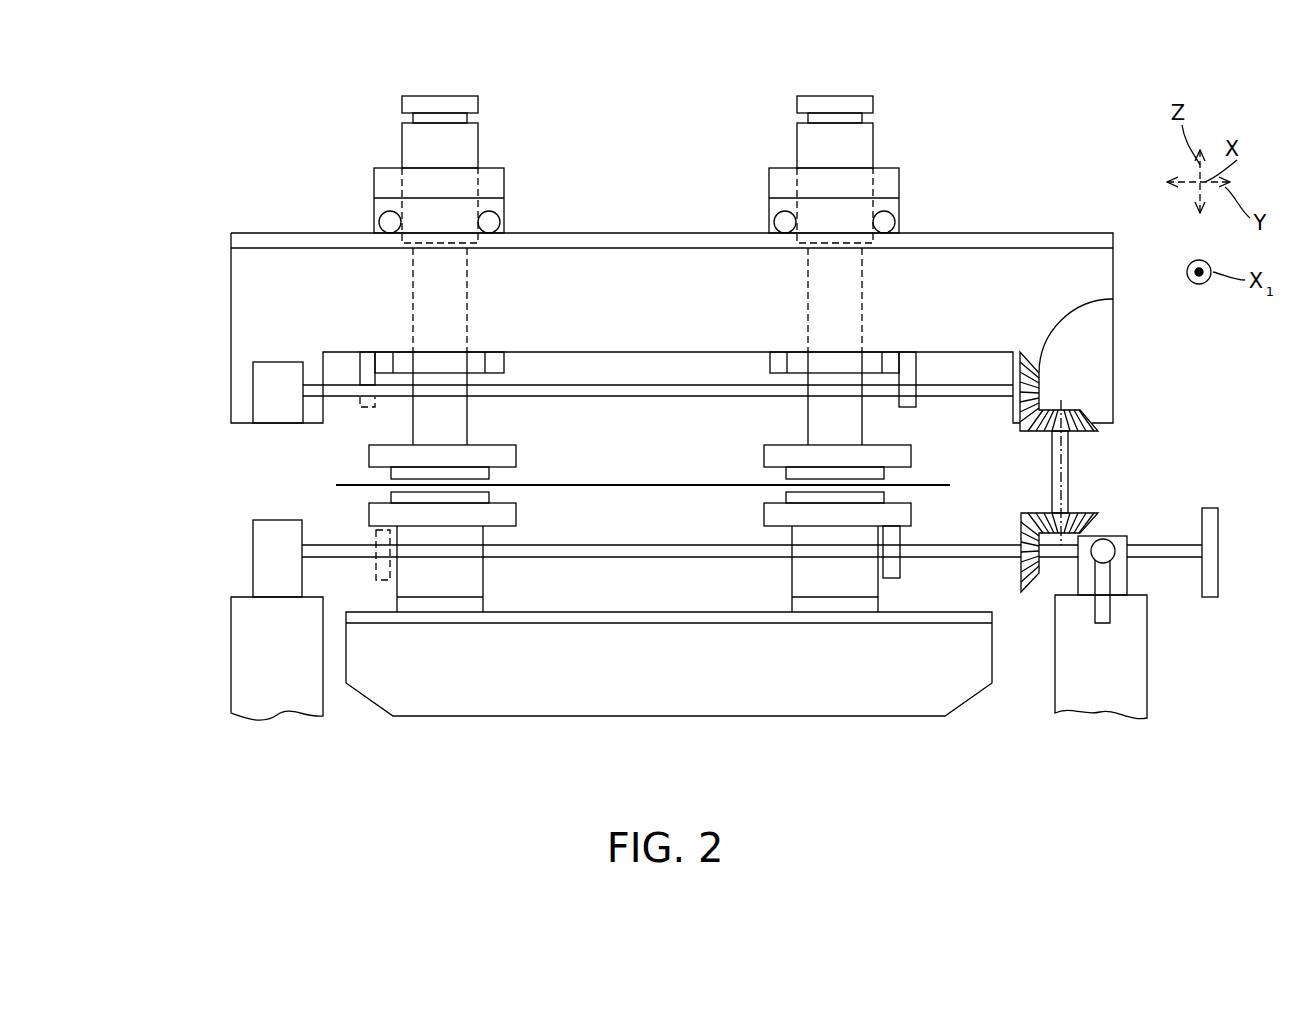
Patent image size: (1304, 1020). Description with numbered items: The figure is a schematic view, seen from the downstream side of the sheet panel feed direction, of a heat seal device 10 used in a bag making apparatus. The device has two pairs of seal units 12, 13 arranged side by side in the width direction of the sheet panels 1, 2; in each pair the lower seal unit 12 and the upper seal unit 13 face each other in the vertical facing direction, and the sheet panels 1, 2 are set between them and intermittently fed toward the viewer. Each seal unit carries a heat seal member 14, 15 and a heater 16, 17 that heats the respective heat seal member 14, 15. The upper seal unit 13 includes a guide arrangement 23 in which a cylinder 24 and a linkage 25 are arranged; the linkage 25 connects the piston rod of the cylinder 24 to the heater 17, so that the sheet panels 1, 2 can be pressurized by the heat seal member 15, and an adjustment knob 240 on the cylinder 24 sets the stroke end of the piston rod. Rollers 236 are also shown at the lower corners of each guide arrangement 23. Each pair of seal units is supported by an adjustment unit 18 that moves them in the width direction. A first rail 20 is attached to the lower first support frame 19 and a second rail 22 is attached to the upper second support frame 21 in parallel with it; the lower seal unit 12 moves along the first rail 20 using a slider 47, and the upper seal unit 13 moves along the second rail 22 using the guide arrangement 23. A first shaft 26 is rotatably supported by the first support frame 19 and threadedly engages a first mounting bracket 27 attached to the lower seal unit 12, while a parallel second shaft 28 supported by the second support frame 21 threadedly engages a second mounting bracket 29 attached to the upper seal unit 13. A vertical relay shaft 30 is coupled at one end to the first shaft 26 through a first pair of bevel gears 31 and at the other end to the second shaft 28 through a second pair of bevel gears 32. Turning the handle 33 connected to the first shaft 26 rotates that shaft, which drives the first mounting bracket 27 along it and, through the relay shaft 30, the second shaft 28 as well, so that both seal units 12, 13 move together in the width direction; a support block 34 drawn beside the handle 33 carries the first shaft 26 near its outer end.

The sheet panel 1 is at (627, 484).
The sheet panel 2 is at (627, 488).
The heat seal device 10 is at (1000, 108).
The lower seal unit 12 is at (527, 508).
The upper seal unit 13 is at (527, 447).
The heat seal member 14 is at (391, 497).
The heat seal member 15 is at (391, 473).
The heater 16 is at (369, 512).
The heater 17 is at (369, 452).
The adjustment unit 18 is at (352, 373).
The first support frame 19 is at (668, 718).
The first rail 20 is at (617, 620).
The second support frame 21 is at (670, 265).
The second rail 22 is at (617, 240).
The guide arrangement 23 is at (368, 160).
The cylinder 24 is at (410, 145).
The linkage 25 is at (467, 340).
The first shaft 26 is at (957, 558).
The first mounting bracket 27 is at (376, 568).
The second shaft 28 is at (973, 393).
The second mounting bracket 29 is at (358, 368).
The relay shaft 30 is at (1068, 467).
The first pair of bevel gears 31 is at (1020, 572).
The second pair of bevel gears 32 is at (1041, 373).
The handle 33 is at (1218, 567).
The drive motor 34 is at (1108, 607).
The slider 47 is at (437, 605).
The roller 236 is at (492, 216).
The adjustment knob 240 is at (428, 100).